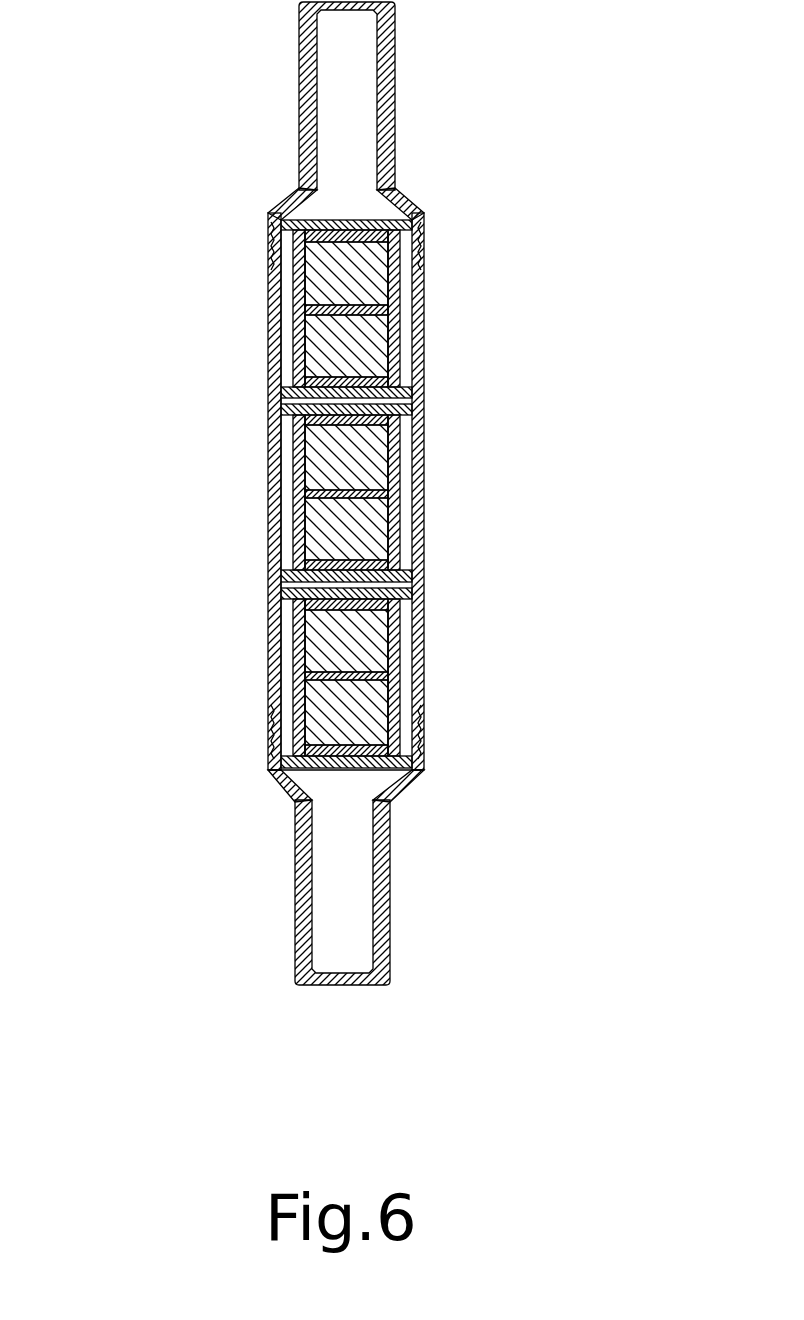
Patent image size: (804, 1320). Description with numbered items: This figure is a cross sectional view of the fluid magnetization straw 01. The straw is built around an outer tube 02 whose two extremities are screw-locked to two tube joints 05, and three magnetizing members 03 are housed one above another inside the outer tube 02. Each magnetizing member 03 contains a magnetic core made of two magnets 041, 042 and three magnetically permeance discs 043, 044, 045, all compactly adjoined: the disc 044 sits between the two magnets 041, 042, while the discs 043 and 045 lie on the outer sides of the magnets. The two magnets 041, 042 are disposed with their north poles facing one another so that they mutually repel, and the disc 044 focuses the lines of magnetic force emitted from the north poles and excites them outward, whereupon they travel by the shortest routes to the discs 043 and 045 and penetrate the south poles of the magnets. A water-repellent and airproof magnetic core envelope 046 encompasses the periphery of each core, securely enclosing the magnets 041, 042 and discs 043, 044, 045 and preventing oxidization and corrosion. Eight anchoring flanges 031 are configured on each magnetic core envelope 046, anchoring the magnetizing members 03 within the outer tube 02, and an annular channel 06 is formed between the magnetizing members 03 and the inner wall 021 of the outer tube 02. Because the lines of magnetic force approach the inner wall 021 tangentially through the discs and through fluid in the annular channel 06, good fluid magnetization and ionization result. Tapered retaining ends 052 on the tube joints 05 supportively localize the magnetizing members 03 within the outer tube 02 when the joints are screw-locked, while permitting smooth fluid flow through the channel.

The fluid magnetization straw 01 is at (530, 155).
The outer tube 02 is at (421, 612).
The inner wall 021 is at (411, 660).
The magnetizing member 03 is at (401, 470).
The anchoring flange 031 is at (404, 400).
The magnet 041 is at (320, 462).
The magnet 042 is at (320, 531).
The magnetically permeance disc 043 is at (320, 424).
The magnetically permeance disc 044 is at (320, 494).
The magnetically permeance disc 045 is at (320, 563).
The magnetic core envelope 046 is at (389, 520).
The tube joint 05 is at (300, 96).
The tapered retaining end 052 is at (293, 197).
The annular channel 06 is at (407, 328).